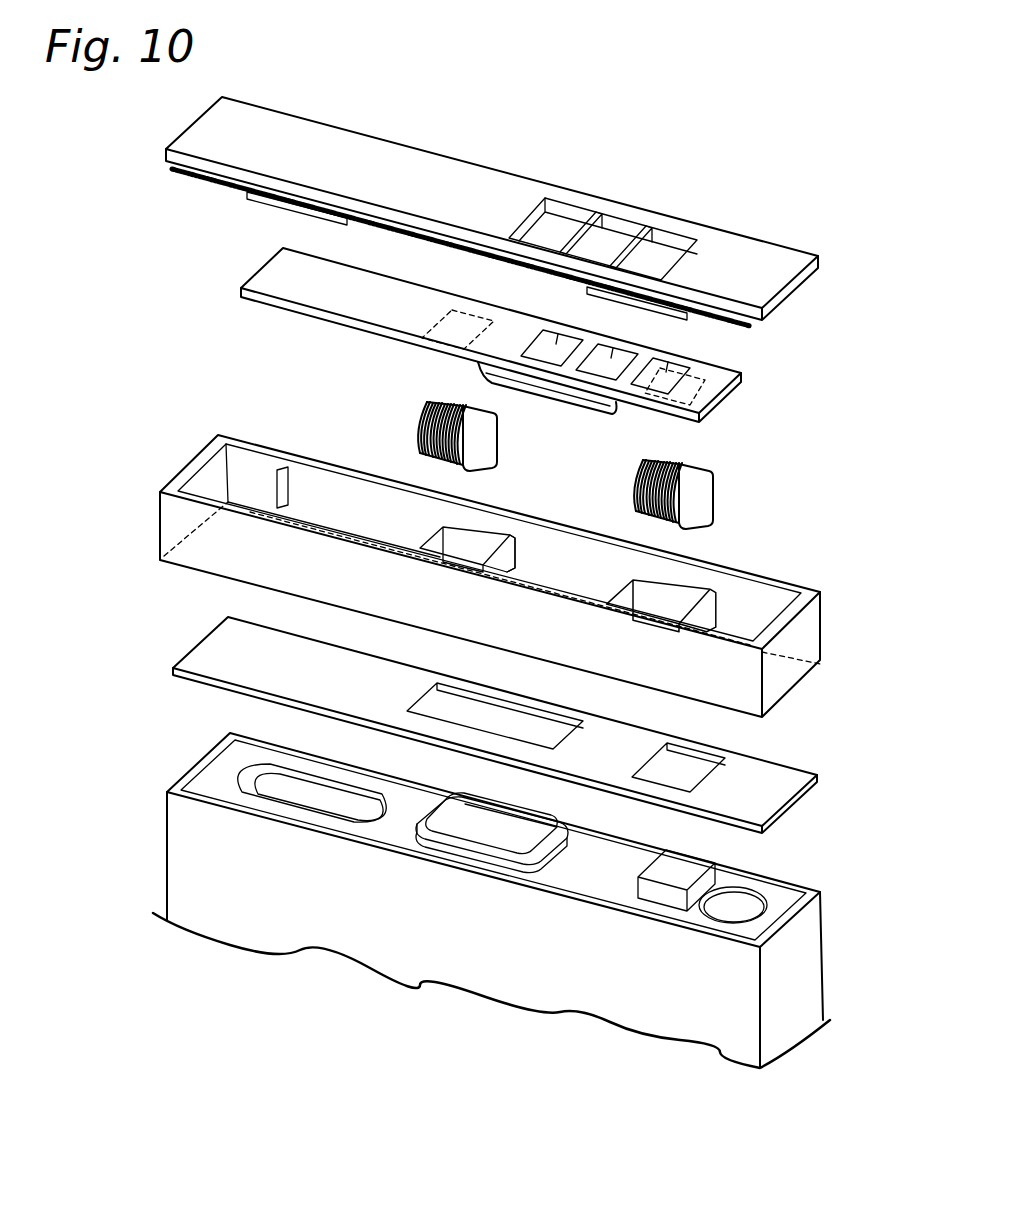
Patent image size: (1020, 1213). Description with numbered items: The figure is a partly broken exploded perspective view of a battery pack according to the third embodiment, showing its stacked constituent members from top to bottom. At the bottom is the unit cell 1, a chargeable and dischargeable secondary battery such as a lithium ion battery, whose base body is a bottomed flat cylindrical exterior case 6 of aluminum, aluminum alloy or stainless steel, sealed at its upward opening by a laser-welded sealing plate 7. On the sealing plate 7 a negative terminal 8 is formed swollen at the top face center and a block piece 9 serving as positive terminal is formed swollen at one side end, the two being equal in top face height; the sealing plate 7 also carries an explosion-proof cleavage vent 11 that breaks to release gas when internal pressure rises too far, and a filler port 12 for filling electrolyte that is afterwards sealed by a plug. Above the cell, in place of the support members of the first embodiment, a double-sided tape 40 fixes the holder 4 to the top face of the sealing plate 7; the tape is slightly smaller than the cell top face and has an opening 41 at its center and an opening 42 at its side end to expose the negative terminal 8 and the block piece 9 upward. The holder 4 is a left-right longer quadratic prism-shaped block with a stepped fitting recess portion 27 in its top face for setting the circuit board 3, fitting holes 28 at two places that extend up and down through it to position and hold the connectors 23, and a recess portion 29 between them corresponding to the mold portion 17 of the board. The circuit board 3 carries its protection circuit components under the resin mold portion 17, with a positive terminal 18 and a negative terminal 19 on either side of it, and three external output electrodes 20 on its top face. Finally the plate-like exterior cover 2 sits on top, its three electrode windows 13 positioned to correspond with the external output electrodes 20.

The unit cell 1 is at (163, 828).
The exterior cover 2 is at (466, 153).
The circuit board 3 is at (248, 268).
The holder 4 is at (177, 478).
The exterior case 6 is at (163, 852).
The sealing plate 7 is at (605, 878).
The negative terminal 8 is at (478, 822).
The block piece 9 is at (677, 868).
The cleavage vent 11 is at (333, 800).
The filler port 12 is at (732, 906).
The electrode windows 13 is at (660, 260).
The mold portion 17 is at (557, 393).
The positive terminal 18 is at (703, 400).
The negative terminal 19 is at (430, 343).
The external output electrodes 20 is at (656, 368).
The connectors 23 is at (417, 440).
The fitting recess portion 27 is at (313, 505).
The fitting holes 28 is at (477, 547).
The recess portion 29 is at (517, 558).
The double-sided tape 40 is at (218, 652).
The opening 41 is at (557, 740).
The opening 42 is at (703, 773).